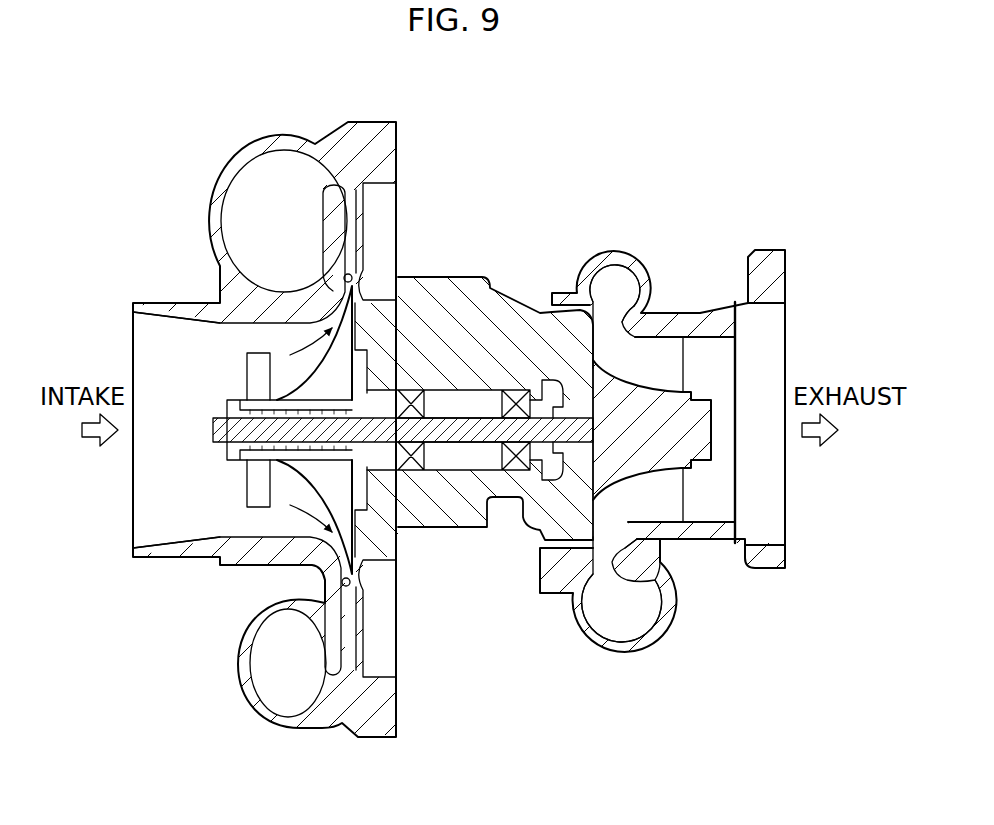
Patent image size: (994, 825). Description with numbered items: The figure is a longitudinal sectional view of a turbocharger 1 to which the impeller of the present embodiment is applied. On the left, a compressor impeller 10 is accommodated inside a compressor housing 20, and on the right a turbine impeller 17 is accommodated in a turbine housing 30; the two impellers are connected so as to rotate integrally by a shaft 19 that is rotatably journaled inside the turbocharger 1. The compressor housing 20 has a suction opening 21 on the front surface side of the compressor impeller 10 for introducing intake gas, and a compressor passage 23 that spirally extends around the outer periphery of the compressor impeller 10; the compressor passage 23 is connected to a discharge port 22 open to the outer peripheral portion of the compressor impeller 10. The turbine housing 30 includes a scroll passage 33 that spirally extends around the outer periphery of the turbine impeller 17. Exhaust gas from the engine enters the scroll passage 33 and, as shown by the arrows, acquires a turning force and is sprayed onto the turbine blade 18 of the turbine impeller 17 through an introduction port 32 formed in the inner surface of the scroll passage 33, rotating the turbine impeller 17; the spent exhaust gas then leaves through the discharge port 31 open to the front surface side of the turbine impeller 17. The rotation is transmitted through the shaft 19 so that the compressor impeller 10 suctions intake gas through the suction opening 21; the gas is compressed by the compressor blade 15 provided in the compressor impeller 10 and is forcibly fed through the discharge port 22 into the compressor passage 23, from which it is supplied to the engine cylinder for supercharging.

The turbocharger 1 is at (145, 212).
The compressor impeller 10 is at (243, 388).
The compressor blade 15 is at (265, 483).
The turbine impeller 17 is at (688, 391).
The turbine blade 18 is at (680, 494).
The shaft 19 is at (447, 385).
The compressor housing 20 is at (183, 558).
The suction opening 21 is at (160, 545).
The discharge port 22 is at (352, 276).
The compressor passage 23 is at (300, 232).
The turbine housing 30 is at (713, 547).
The discharge port 31 is at (745, 527).
The introduction port 32 is at (622, 309).
The scroll passage 33 is at (617, 352).